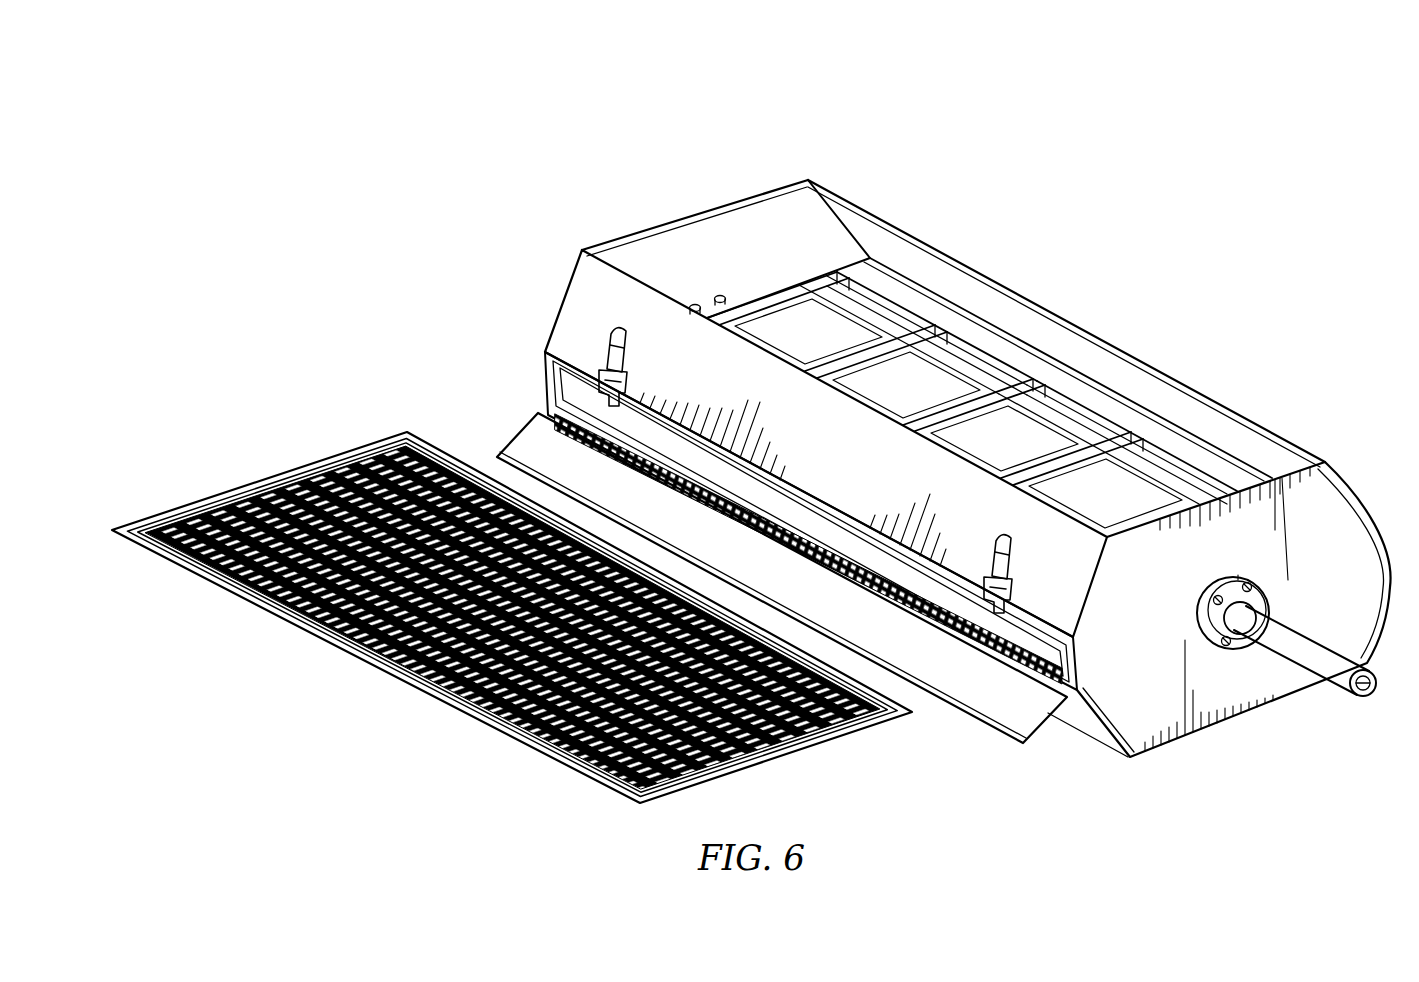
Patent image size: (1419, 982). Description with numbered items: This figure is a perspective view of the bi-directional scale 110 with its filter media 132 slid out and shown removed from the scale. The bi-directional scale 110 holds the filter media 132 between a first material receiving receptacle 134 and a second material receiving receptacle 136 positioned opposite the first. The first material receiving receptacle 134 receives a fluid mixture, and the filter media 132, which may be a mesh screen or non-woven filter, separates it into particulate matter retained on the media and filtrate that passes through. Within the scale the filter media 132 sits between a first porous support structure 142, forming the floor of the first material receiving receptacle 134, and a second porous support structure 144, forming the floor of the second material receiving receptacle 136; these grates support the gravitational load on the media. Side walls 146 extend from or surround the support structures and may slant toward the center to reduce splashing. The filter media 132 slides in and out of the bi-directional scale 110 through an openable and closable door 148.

The bi-directional scale 110 is at (992, 152).
The filter media 132 is at (430, 450).
The first material receiving receptacle 134 is at (698, 128).
The second material receiving receptacle 136 is at (1141, 790).
The first porous support structure 142 is at (1068, 468).
The second porous support structure 144 is at (910, 380).
The side walls 146 is at (592, 305).
The door 148 is at (940, 670).